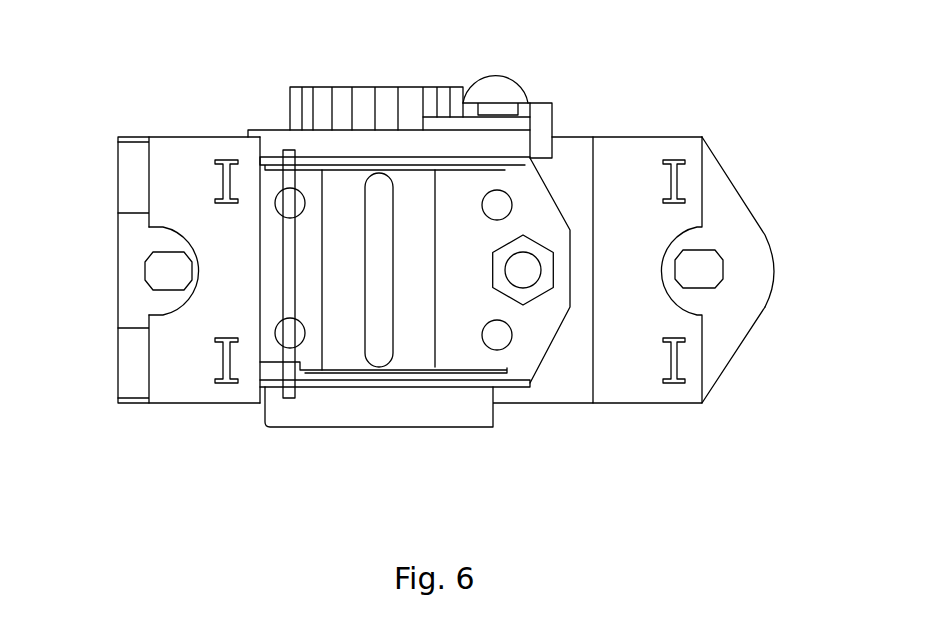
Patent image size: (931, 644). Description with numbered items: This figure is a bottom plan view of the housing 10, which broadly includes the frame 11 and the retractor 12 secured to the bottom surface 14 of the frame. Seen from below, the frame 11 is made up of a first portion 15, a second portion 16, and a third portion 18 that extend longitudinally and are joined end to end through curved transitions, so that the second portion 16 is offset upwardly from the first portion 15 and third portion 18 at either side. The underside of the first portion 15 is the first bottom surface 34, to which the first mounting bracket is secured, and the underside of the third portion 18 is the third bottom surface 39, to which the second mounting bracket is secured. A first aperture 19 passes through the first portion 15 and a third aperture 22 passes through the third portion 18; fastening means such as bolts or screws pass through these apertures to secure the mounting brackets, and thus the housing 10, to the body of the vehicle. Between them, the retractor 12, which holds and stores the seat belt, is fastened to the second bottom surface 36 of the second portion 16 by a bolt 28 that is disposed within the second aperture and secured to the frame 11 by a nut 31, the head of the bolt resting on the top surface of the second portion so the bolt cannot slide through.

The housing 10 is at (646, 64).
The frame 11 is at (573, 158).
The retractor 12 is at (342, 105).
The bottom surface 14 is at (745, 258).
The first portion 15 is at (137, 137).
The second portion 16 is at (543, 378).
The third portion 18 is at (758, 275).
The first aperture 19 is at (175, 270).
The third aperture 22 is at (700, 268).
The bolt 28 is at (540, 266).
The nut 31 is at (525, 272).
The first bottom surface 34 is at (132, 243).
The second bottom surface 36 is at (568, 353).
The third bottom surface 39 is at (718, 343).